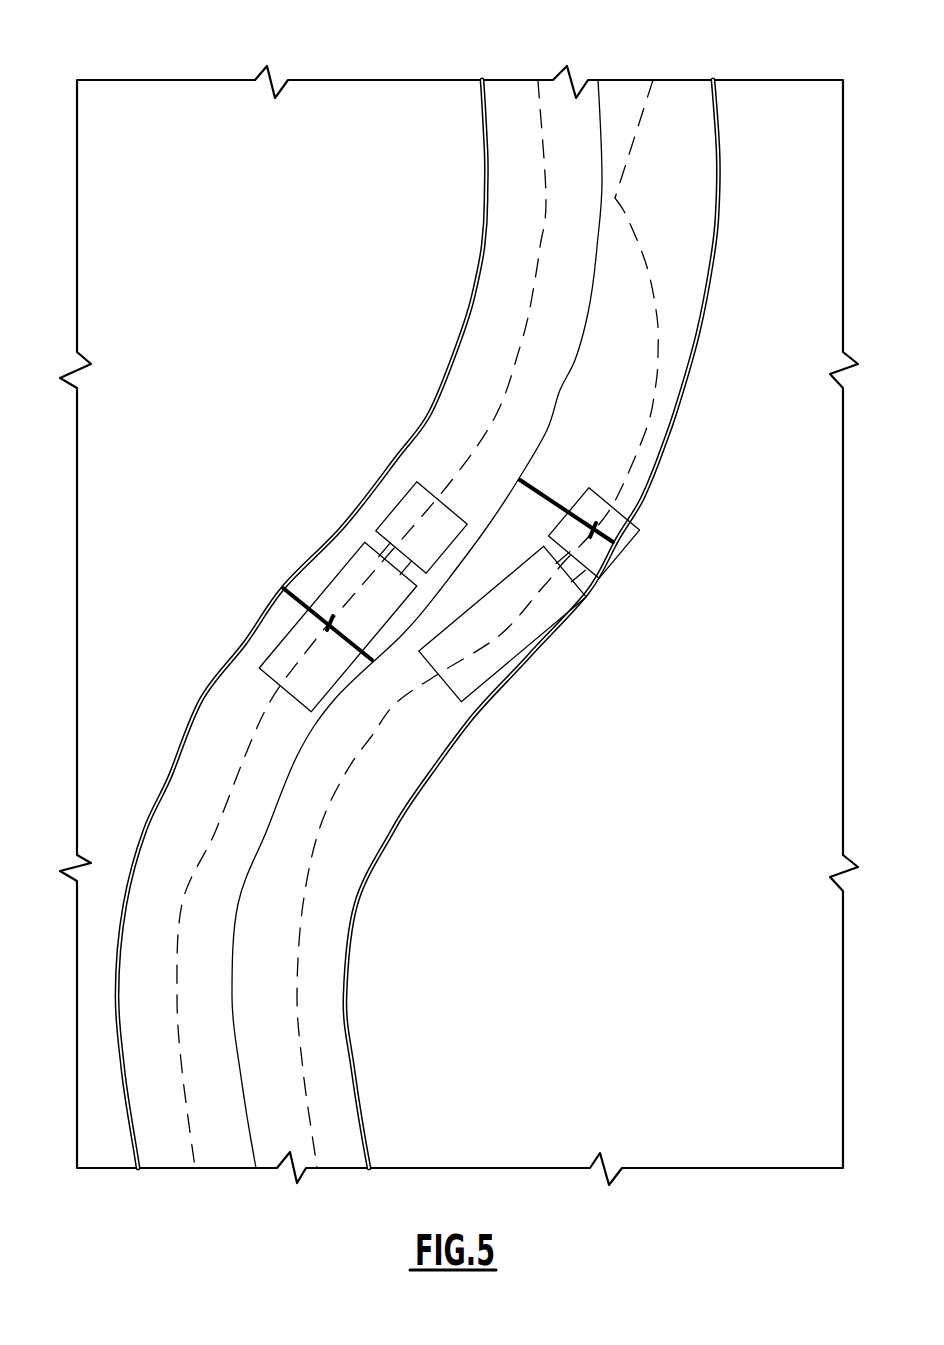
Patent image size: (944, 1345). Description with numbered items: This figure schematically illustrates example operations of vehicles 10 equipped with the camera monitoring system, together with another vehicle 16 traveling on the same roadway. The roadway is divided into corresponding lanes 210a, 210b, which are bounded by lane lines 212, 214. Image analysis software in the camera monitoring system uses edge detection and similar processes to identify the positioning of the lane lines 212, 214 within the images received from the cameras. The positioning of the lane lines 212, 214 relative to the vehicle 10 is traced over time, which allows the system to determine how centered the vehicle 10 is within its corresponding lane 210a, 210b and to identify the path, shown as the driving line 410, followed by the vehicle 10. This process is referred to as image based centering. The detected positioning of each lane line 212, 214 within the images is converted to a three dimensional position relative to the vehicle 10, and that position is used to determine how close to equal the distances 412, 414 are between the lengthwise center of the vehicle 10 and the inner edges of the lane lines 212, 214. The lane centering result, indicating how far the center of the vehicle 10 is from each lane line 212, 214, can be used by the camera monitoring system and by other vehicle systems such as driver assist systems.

The vehicle 10 is at (578, 605).
The other vehicle with trailer 16 is at (352, 552).
The lane 210a is at (515, 102).
The lane 210b is at (623, 100).
The lane line 212 is at (445, 370).
The lane line 214 is at (575, 361).
The driving line 410 is at (485, 590).
The distance 412 is at (330, 607).
The distance 414 is at (330, 633).